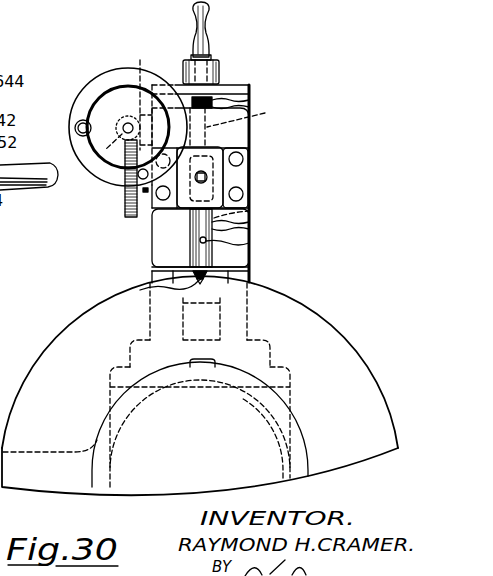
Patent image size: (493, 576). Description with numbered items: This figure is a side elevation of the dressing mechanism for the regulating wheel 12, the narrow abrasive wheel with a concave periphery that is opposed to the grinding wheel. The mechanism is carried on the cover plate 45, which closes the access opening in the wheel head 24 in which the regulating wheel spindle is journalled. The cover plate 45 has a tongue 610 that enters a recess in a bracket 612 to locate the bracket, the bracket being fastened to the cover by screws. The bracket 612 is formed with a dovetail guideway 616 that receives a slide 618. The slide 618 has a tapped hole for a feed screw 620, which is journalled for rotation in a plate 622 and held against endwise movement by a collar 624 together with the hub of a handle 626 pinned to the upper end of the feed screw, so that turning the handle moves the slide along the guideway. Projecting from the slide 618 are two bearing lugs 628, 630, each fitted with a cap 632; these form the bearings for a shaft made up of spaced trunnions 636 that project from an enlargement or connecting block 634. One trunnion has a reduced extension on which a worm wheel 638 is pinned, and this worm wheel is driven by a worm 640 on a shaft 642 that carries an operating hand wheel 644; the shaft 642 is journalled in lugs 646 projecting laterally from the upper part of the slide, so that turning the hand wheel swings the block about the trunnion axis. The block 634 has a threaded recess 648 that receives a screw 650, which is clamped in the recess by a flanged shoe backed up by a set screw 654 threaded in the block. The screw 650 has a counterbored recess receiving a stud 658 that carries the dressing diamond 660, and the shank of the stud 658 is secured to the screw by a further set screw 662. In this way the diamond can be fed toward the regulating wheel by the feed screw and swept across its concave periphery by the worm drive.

The regulating wheel 12 is at (72, 322).
The wheel head 24 is at (125, 420).
The cover plate 45 is at (125, 382).
The tongue 610 is at (217, 388).
The bracket 612 is at (300, 300).
The dovetail guideway 616 is at (150, 272).
The slide 618 is at (160, 247).
The feed screw 620 is at (252, 116).
The plate 622 is at (250, 88).
The collar 624 is at (250, 100).
The handle 626 is at (213, 60).
The bearing lug 628 is at (155, 212).
The bearing lug 630 is at (250, 208).
The cap 632 is at (247, 199).
The connecting block 634 is at (218, 150).
The trunnions 636 is at (252, 176).
The worm wheel 638 is at (124, 207).
The worm 640 is at (118, 122).
The shaft 642 is at (126, 124).
The hand wheel 644 is at (108, 71).
The lugs 646 is at (141, 68).
The threaded recess 648 is at (252, 217).
The screw 650 is at (250, 231).
The set screw 654 is at (205, 176).
The stud 658 is at (250, 270).
The diamond 660 is at (140, 290).
The set screw 662 is at (252, 244).